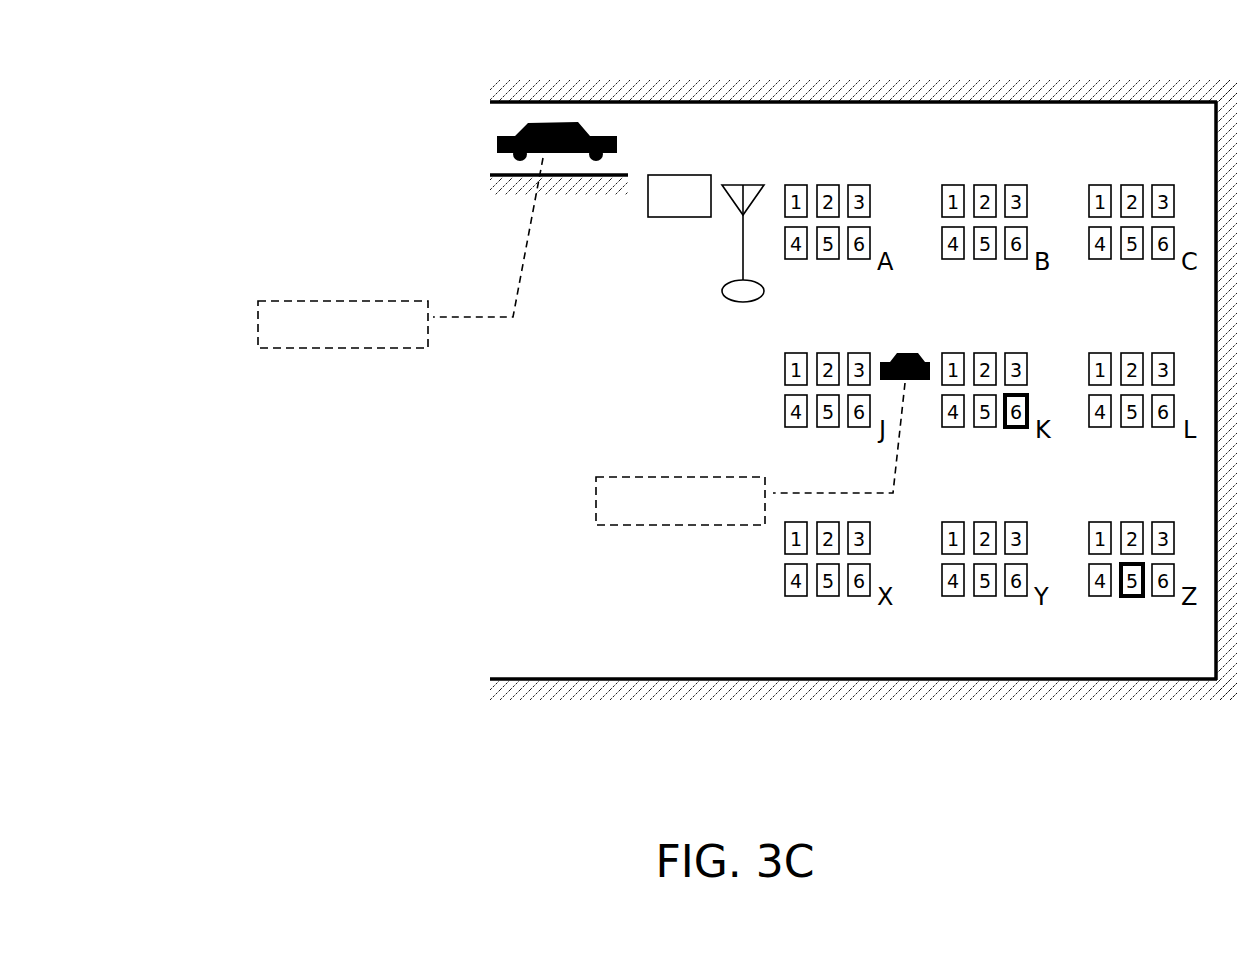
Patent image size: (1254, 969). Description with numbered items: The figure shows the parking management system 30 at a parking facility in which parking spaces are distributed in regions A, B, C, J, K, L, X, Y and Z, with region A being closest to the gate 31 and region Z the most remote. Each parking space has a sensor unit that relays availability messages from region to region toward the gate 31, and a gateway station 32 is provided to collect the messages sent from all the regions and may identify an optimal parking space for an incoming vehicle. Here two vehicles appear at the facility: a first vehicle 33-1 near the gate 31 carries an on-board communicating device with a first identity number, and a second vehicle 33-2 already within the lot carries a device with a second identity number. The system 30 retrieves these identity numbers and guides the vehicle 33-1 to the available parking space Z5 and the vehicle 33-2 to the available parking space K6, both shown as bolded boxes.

The system 30 is at (312, 73).
The gate 31 is at (667, 218).
The gateway station 32 is at (737, 302).
The vehicle 33-1 is at (500, 140).
The vehicle 33-2 is at (890, 356).